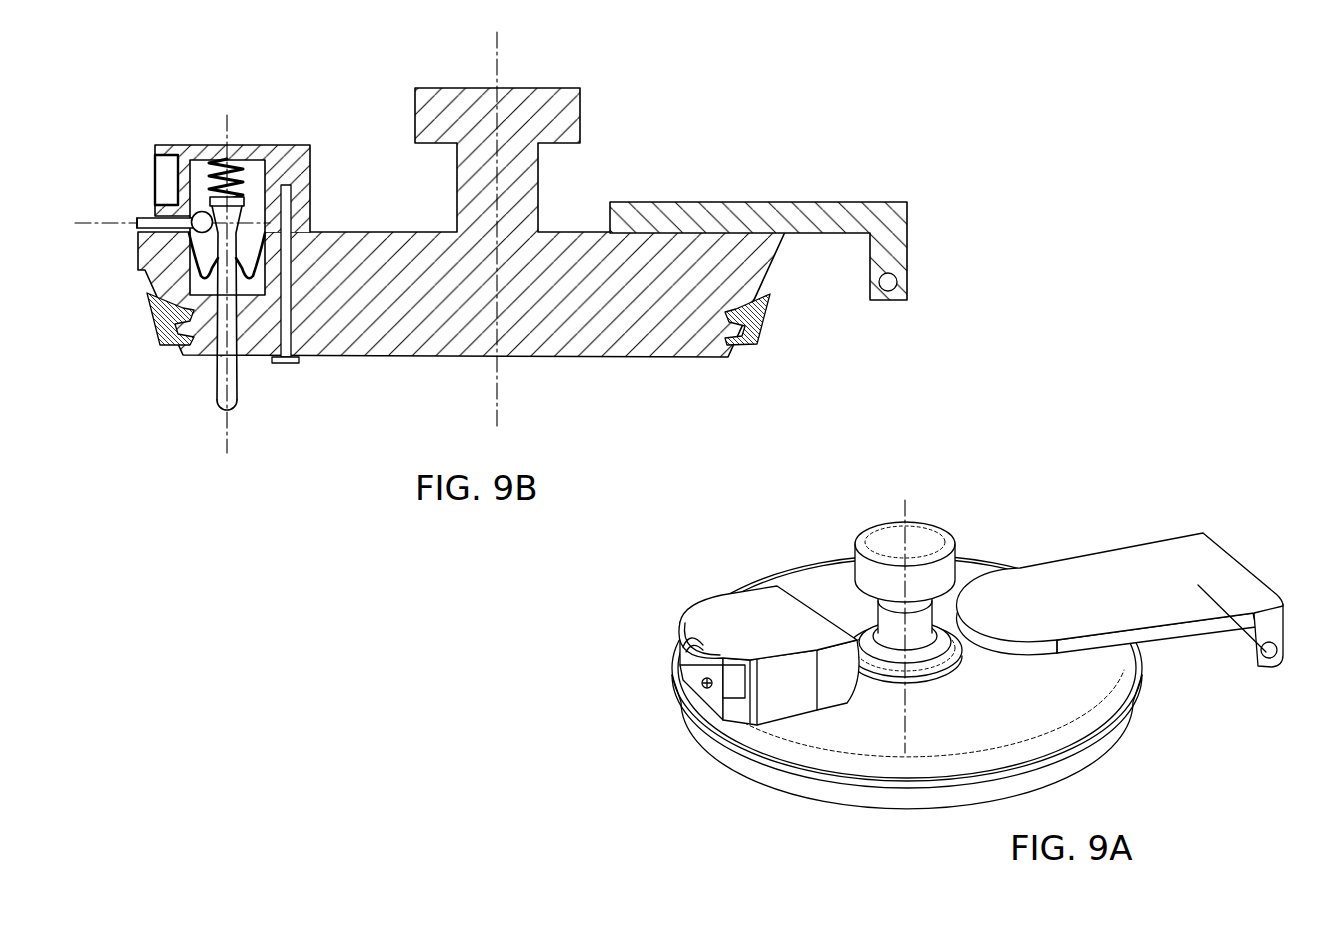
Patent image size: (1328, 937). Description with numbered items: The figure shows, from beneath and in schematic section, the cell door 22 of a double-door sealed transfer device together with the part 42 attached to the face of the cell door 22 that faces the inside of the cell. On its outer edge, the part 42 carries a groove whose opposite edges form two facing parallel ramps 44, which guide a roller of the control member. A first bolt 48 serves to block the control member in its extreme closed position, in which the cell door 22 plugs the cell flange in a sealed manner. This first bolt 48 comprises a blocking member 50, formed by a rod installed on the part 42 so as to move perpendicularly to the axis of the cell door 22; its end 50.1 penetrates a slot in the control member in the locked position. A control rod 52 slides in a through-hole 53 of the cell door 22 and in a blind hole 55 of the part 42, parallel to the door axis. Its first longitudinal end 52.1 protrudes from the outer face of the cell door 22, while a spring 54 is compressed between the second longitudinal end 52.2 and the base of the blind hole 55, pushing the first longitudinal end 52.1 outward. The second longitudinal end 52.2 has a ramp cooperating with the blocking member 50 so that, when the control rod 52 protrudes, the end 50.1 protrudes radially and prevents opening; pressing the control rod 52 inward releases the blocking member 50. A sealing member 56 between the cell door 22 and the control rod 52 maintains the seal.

In FIG. 9B, the cell door 22 is at (668, 142).
In FIG. 9A, the cell door 22 is at (1073, 509).
In FIG. 9B, the part 42 is at (296, 122).
In FIG. 9A, the part 42 is at (738, 618).
In FIG. 9B, the ramps 44 is at (155, 202).
In FIG. 9A, the ramps 44 is at (688, 678).
In FIG. 9B, the first bolt 48 is at (176, 263).
In FIG. 9B, the blocking member 50 is at (156, 214).
In FIG. 9A, the blocking member 50 is at (707, 690).
In FIG. 9B, the end of blocking member 50.1 is at (136, 228).
In FIG. 9B, the control rod 52 is at (264, 301).
In FIG. 9B, the first longitudinal end 52.1 is at (232, 400).
In FIG. 9B, the second longitudinal end 52.2 is at (234, 212).
In FIG. 9B, the through-hole 53 is at (258, 280).
In FIG. 9B, the spring 54 is at (215, 162).
In FIG. 9B, the blind hole 55 is at (260, 170).
In FIG. 9B, the sealing member 56 is at (247, 278).